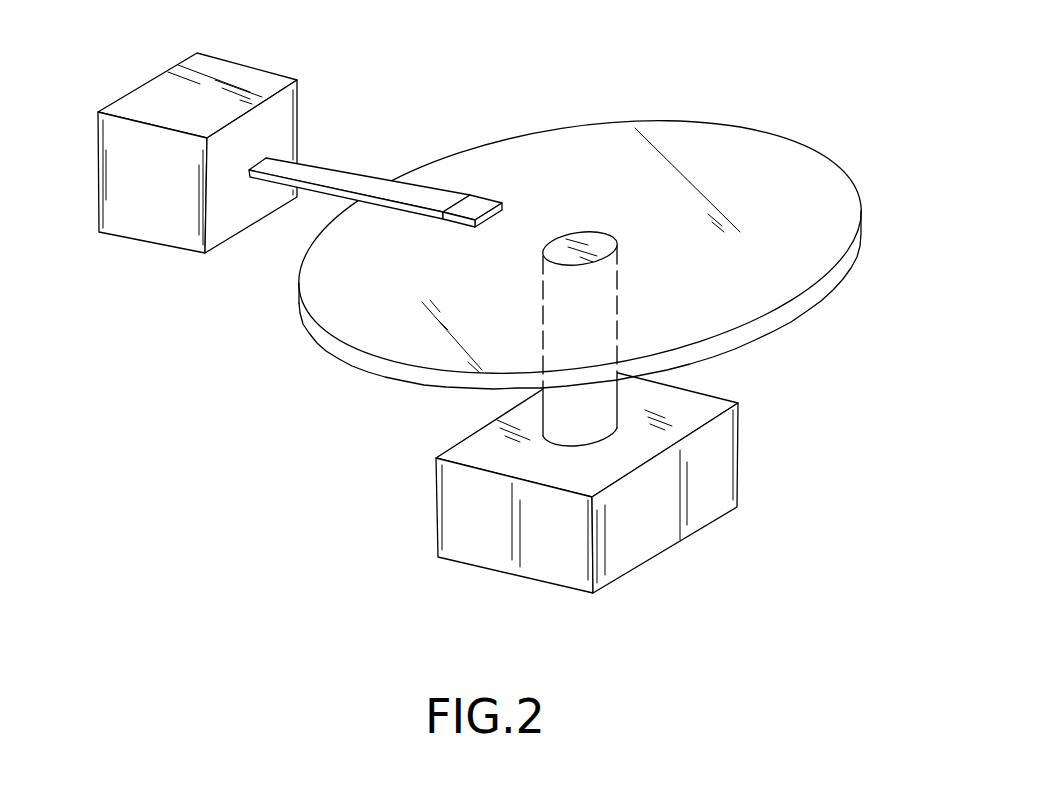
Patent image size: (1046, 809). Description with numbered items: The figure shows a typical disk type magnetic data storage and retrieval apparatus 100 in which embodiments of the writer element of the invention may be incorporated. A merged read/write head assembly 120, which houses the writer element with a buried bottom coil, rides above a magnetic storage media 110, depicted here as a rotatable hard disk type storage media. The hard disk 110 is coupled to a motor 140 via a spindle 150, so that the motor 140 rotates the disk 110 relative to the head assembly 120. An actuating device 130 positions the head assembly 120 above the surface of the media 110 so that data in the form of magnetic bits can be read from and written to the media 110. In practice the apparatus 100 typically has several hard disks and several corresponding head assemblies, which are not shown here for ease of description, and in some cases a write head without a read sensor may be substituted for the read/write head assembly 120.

The data storage and retrieval apparatus 100 is at (238, 343).
The magnetic storage media 110 is at (753, 142).
The merged read/write head assembly 120 is at (478, 207).
The actuating device 130 is at (157, 225).
The motor 140 is at (702, 402).
The spindle 150 is at (545, 405).